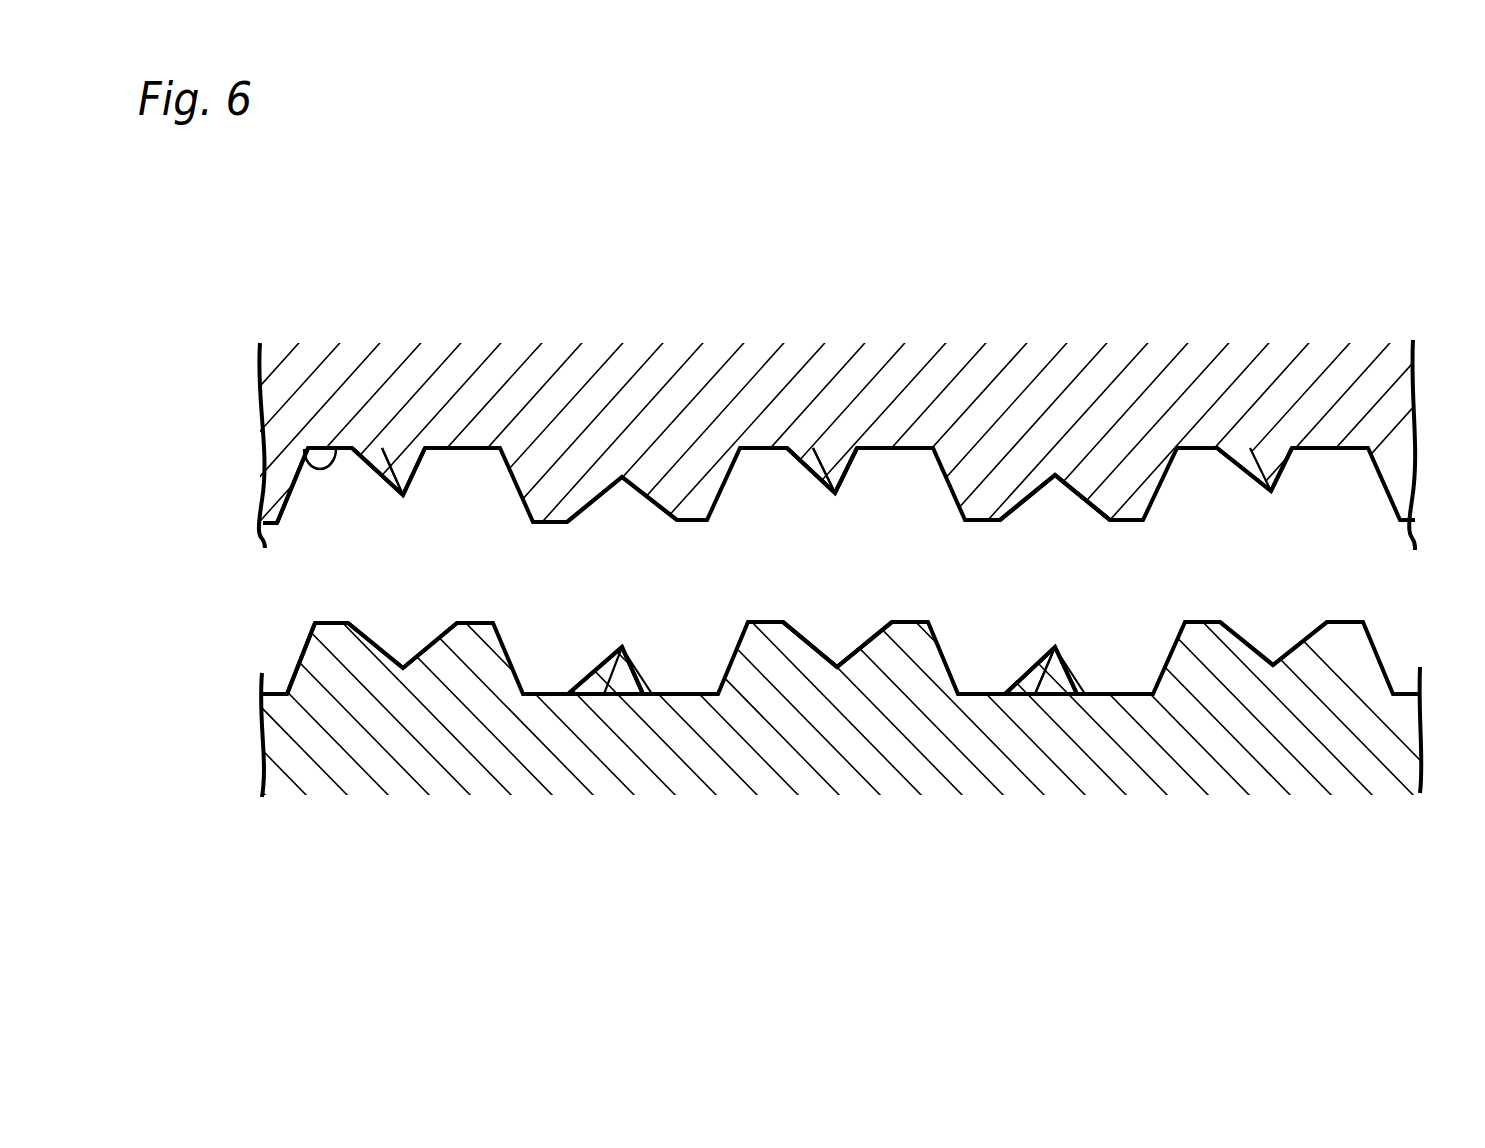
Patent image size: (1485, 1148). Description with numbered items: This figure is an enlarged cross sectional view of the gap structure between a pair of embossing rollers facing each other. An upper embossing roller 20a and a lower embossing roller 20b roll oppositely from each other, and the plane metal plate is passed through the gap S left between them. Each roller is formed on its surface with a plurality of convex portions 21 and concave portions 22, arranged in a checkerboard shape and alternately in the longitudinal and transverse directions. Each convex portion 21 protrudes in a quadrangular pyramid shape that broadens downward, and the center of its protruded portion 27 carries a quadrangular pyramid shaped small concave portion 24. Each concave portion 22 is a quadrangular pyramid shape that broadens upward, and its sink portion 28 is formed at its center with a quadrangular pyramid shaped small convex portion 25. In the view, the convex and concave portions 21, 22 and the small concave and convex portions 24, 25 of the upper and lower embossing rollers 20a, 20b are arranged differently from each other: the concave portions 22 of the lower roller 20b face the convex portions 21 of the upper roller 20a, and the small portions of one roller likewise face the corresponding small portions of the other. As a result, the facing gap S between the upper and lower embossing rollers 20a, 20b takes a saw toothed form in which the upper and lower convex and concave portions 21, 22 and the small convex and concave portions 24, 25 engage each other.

The upper embossing roller 20a is at (437, 308).
The lower embossing roller 20b is at (483, 842).
The convex portion 21 is at (617, 443).
The concave portion 22 is at (837, 413).
The small concave portion 24 is at (397, 640).
The small convex portion 25 is at (428, 468).
The protruded portion 27 is at (467, 623).
The sink portion 28 is at (303, 480).
The gap S is at (1347, 577).